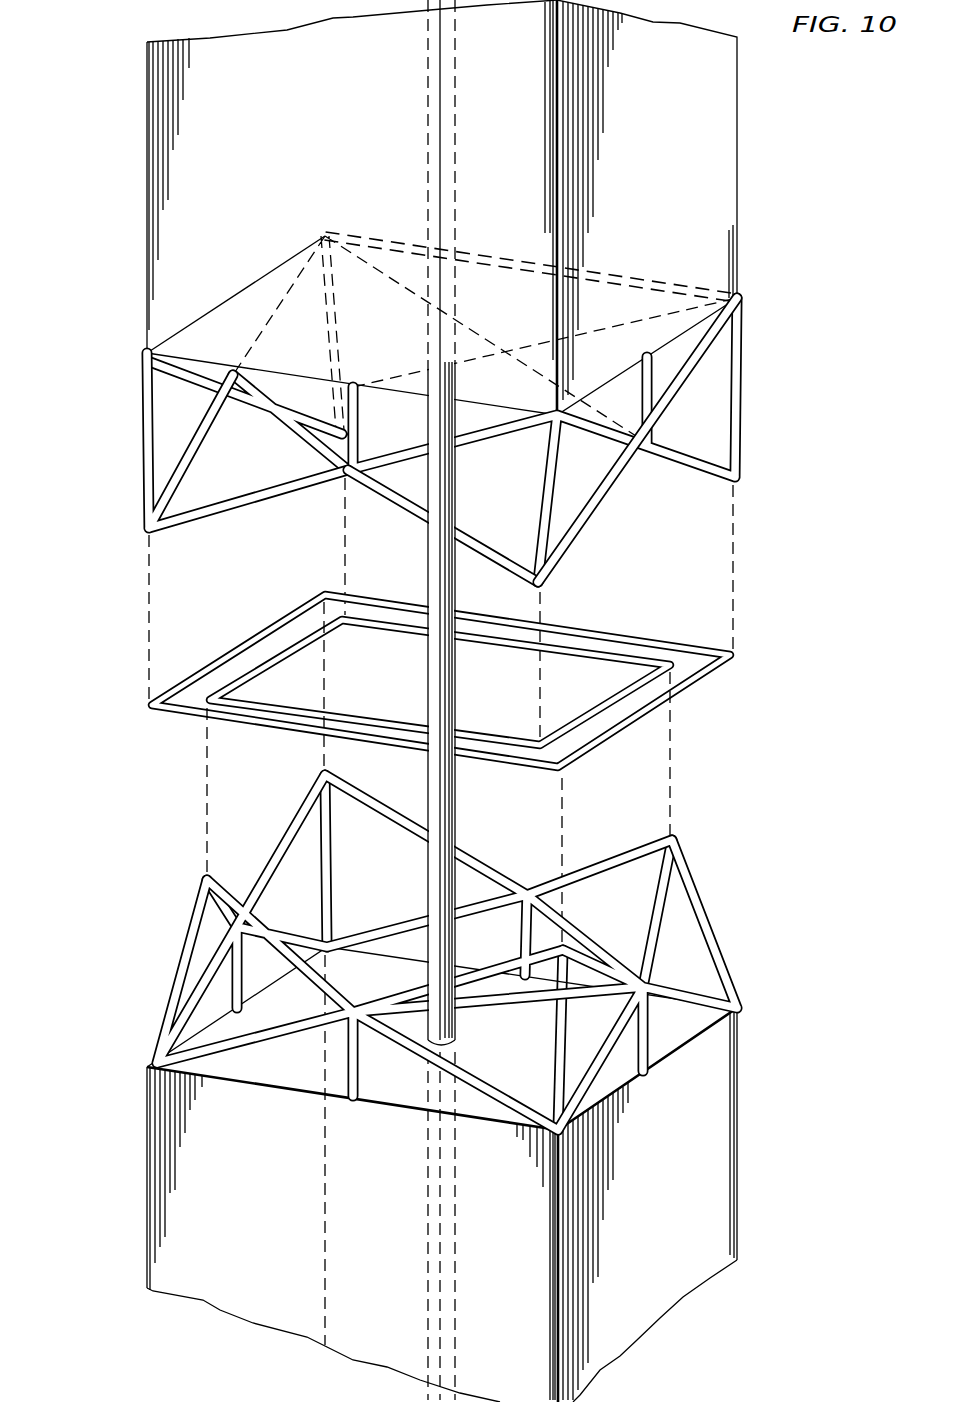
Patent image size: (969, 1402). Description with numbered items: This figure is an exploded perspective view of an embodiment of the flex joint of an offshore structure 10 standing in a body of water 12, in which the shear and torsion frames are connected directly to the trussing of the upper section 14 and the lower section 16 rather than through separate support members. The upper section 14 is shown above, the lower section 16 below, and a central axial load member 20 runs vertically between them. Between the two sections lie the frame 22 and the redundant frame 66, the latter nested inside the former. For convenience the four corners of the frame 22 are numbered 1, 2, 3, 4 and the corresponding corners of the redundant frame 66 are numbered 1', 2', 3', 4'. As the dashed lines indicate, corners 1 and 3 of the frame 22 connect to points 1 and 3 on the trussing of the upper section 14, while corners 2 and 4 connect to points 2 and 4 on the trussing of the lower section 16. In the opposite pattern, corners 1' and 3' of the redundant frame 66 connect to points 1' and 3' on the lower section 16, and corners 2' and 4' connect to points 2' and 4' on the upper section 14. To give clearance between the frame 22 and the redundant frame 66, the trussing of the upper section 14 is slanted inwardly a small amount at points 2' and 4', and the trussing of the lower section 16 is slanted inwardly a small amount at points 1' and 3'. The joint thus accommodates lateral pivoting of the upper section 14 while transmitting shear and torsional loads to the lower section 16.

The offshore structure 10 is at (86, 453).
The body of water 12 is at (803, 791).
The upper section 14 is at (738, 180).
The lower section 16 is at (745, 1133).
The axial load member 20 is at (430, 883).
The frame 22 is at (274, 624).
The redundant frame 66 is at (394, 718).
The corner 1 of frame 1 is at (237, 526).
The corner 2 of frame 2 is at (551, 954).
The corner 3 of frame 3 is at (744, 561).
The corner 4 of frame 4 is at (315, 774).
The corner 1' of redundant frame 1' is at (210, 817).
The corner 2' of redundant frame 2' is at (637, 519).
The corner 3' of redundant frame 3' is at (672, 829).
The corner 4' of redundant frame 4' is at (400, 531).